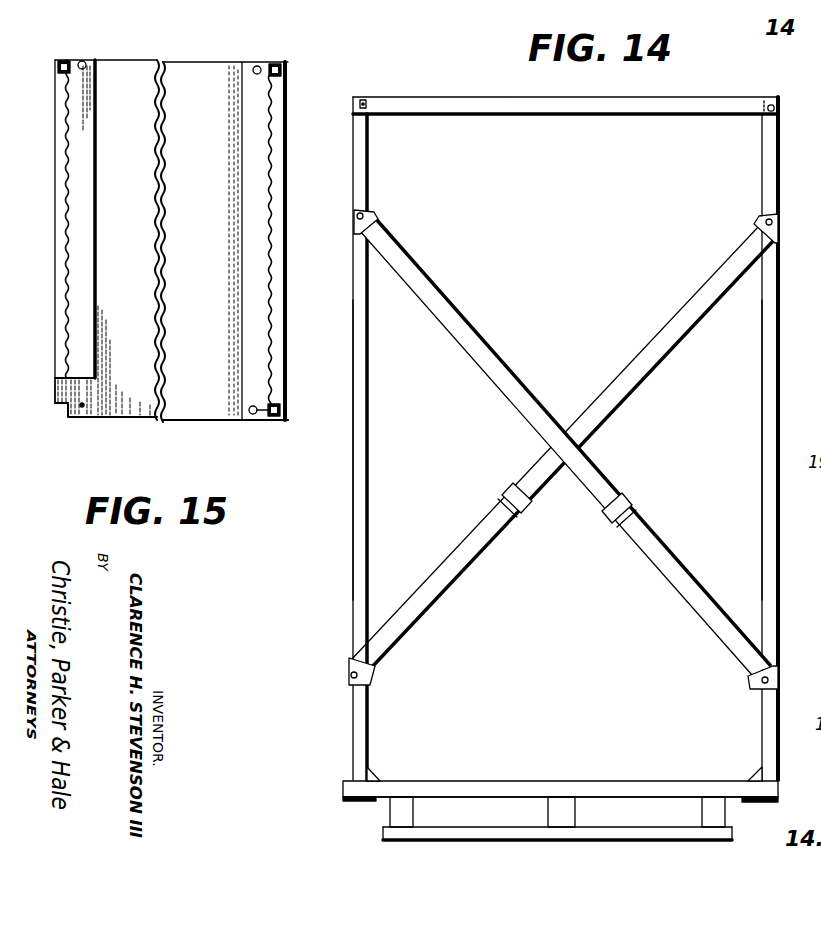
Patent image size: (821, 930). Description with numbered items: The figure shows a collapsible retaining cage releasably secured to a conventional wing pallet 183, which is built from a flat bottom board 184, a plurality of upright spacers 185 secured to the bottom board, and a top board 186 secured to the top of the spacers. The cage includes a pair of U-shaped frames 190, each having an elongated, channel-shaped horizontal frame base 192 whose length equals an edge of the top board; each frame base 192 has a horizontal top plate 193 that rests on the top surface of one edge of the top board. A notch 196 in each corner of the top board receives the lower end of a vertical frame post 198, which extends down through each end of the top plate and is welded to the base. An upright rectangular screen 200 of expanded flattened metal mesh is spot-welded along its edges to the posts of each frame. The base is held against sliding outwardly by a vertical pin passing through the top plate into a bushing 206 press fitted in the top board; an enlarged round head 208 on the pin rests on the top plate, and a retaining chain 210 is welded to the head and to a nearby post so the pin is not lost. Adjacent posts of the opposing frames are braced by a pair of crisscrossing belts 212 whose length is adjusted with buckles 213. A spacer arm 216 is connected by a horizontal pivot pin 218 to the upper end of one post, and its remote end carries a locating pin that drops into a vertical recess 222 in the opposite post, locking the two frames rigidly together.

In FIG. 14, the wing pallet 183 is at (519, 781).
In FIG. 15, the wing pallet 183 is at (190, 419).
In FIG. 14, the bottom board 184 is at (647, 832).
In FIG. 14, the upright spacers 185 is at (397, 812).
In FIG. 14, the top board 186 is at (630, 784).
In FIG. 14, the U-shaped frame 190 is at (369, 520).
In FIG. 14, the frame base 192 is at (343, 785).
In FIG. 15, the frame base 192 is at (287, 329).
In FIG. 15, the top plate 193 is at (95, 312).
In FIG. 14, the notch 196 is at (368, 453).
In FIG. 15, the notch 196 is at (68, 405).
In FIG. 14, the vertical frame post 198 is at (762, 447).
In FIG. 15, the vertical frame post 198 is at (63, 61).
In FIG. 15, the screen 200 is at (68, 188).
In FIG. 15, the bushing 206 is at (83, 407).
In FIG. 14, the round head 208 is at (378, 775).
In FIG. 15, the round head 208 is at (253, 73).
In FIG. 15, the retaining chain 210 is at (260, 68).
In FIG. 14, the crisscrossing belts 212 is at (591, 412).
In FIG. 14, the buckles 213 is at (605, 505).
In FIG. 14, the spacer arm 216 is at (604, 116).
In FIG. 14, the horizontal pivot pin 218 is at (772, 106).
In FIG. 14, the vertical recess 222 is at (366, 96).